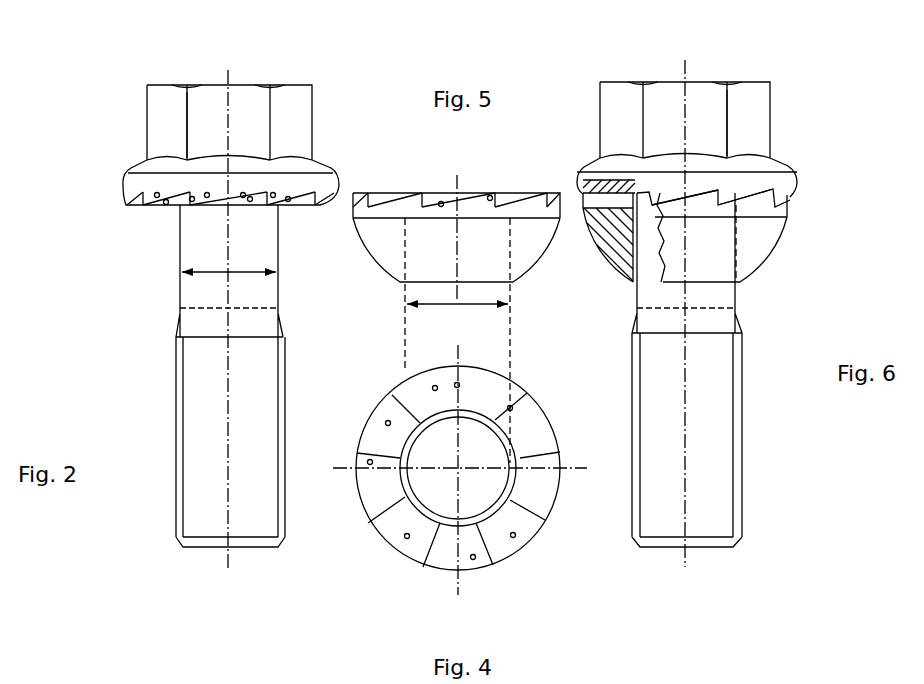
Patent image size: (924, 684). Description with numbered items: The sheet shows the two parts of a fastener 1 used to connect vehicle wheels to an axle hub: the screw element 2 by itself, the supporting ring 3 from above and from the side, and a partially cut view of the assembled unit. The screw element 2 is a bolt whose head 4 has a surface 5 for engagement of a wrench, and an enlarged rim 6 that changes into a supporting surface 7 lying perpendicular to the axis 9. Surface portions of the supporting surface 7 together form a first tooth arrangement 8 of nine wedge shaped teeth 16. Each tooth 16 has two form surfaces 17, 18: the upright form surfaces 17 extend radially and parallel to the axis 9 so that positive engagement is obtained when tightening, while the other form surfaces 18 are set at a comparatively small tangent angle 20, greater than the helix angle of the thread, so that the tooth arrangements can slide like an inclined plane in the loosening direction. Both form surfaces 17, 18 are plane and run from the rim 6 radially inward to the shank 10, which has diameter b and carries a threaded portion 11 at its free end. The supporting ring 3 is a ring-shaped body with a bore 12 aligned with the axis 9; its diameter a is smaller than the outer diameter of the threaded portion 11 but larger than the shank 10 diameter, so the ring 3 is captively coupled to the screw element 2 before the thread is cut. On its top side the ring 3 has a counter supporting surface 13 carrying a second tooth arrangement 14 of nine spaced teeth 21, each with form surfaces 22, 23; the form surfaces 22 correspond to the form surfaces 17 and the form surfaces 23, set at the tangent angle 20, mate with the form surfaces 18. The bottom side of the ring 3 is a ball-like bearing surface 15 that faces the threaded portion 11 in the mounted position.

In FIG. 2, the fastener 1 is at (228, 303).
In FIG. 6, the fastener 1 is at (738, 283).
In FIG. 2, the screw element 2 is at (255, 99).
In FIG. 6, the screw element 2 is at (685, 86).
In FIG. 5, the supporting ring 3 is at (473, 278).
In FIG. 4, the supporting ring 3 is at (471, 475).
In FIG. 6, the supporting ring 3 is at (741, 265).
In FIG. 2, the head 4 is at (302, 164).
In FIG. 6, the head 4 is at (745, 162).
In FIG. 2, the surface 5 is at (297, 124).
In FIG. 6, the surface 5 is at (698, 98).
In FIG. 2, the rim 6 is at (228, 210).
In FIG. 6, the rim 6 is at (727, 162).
In FIG. 2, the supporting surface 7 is at (230, 223).
In FIG. 6, the supporting surface 7 is at (757, 186).
In FIG. 2, the first tooth arrangement 8 is at (301, 208).
In FIG. 6, the first tooth arrangement 8 is at (743, 180).
In FIG. 2, the axis 9 is at (230, 119).
In FIG. 6, the axis 9 is at (683, 68).
In FIG. 6, the shank 10 is at (739, 293).
In FIG. 6, the threaded portion 11 is at (734, 426).
In FIG. 5, the bore 12 is at (509, 255).
In FIG. 4, the bore 12 is at (505, 486).
In FIG. 6, the bore 12 is at (628, 253).
In FIG. 5, the counter supporting surface 13 is at (456, 163).
In FIG. 6, the counter supporting surface 13 is at (776, 206).
In FIG. 5, the second tooth arrangement 14 is at (474, 192).
In FIG. 6, the second tooth arrangement 14 is at (763, 204).
In FIG. 5, the bearing surface 15 is at (532, 252).
In FIG. 6, the bearing surface 15 is at (755, 250).
In FIG. 2, the teeth 16 is at (271, 194).
In FIG. 2, the form surfaces 17 is at (190, 201).
In FIG. 2, the form surfaces 18 is at (252, 201).
In FIG. 2, the tangent angle 20 is at (164, 204).
In FIG. 4, the teeth 21 is at (433, 387).
In FIG. 5, the form surfaces 22 is at (492, 197).
In FIG. 4, the form surfaces 22 is at (509, 405).
In FIG. 5, the form surfaces 23 is at (439, 202).
In FIG. 4, the form surfaces 23 is at (409, 538).